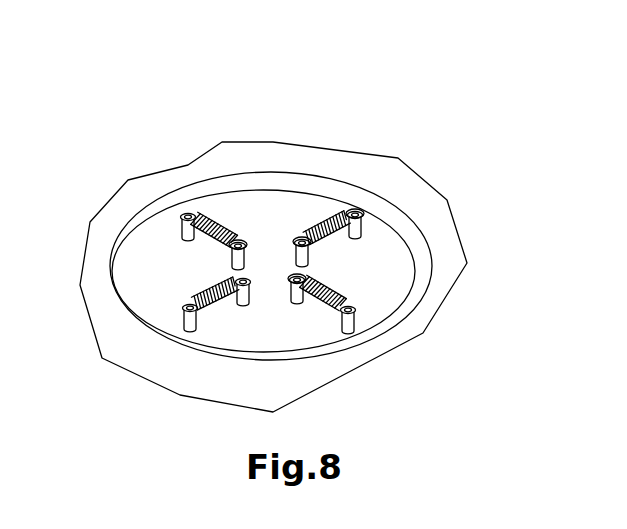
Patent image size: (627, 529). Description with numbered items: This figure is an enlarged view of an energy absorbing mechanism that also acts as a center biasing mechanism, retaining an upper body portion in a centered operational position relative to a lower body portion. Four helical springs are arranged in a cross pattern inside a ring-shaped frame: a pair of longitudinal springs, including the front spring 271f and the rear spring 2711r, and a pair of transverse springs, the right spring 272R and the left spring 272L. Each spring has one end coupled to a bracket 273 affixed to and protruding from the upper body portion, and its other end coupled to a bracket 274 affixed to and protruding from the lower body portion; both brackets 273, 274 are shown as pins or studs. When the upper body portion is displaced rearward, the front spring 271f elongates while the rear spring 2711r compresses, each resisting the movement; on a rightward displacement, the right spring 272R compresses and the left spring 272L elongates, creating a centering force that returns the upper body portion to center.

The right transverse spring 272R is at (213, 216).
The left transverse spring 272L is at (349, 334).
The front longitudinal spring 271f is at (233, 296).
The right rear spring holder 2711r is at (312, 246).
The bracket 273 is at (353, 219).
The bracket 274 is at (186, 213).